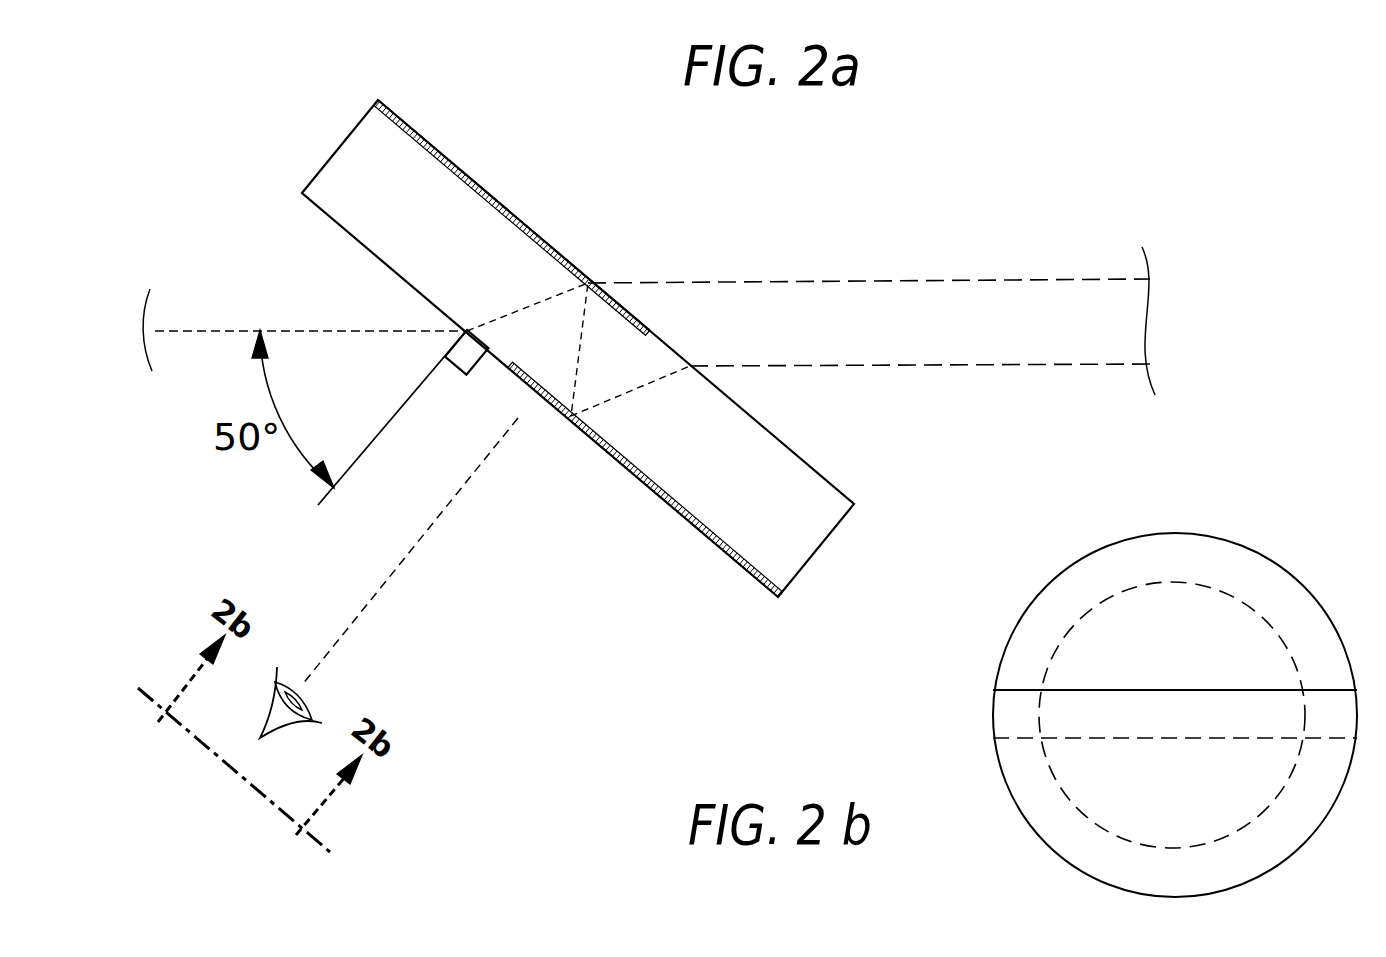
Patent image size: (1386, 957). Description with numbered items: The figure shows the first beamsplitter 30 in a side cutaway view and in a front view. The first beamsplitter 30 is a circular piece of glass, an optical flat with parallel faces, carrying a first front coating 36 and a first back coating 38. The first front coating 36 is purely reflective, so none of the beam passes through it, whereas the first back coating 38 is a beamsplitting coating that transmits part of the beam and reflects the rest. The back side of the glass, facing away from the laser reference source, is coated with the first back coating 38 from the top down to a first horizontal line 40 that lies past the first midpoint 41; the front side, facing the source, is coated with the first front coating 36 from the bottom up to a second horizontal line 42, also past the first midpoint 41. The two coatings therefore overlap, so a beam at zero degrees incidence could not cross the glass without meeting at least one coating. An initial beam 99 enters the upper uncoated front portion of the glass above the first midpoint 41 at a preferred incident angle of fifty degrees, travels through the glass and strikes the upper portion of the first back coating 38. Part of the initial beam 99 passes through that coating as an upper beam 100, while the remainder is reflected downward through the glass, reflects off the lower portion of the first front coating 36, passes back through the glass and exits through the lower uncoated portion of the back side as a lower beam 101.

In FIG. 2a, the first beamsplitter 30 is at (292, 108).
In FIG. 2a, the first front coating 36 is at (665, 512).
In FIG. 2a, the first back coating 38 is at (448, 145).
In FIG. 2a, the first horizontal line 40 is at (665, 330).
In FIG. 2b, the first horizontal line 40 is at (1020, 754).
In FIG. 2b, the first midpoint 41 is at (975, 713).
In FIG. 2a, the second horizontal line 42 is at (492, 383).
In FIG. 2b, the second horizontal line 42 is at (1010, 672).
In FIG. 2a, the initial beam 99 is at (179, 316).
In FIG. 2a, the upper beam 100 is at (785, 266).
In FIG. 2a, the lower beam 101 is at (878, 386).